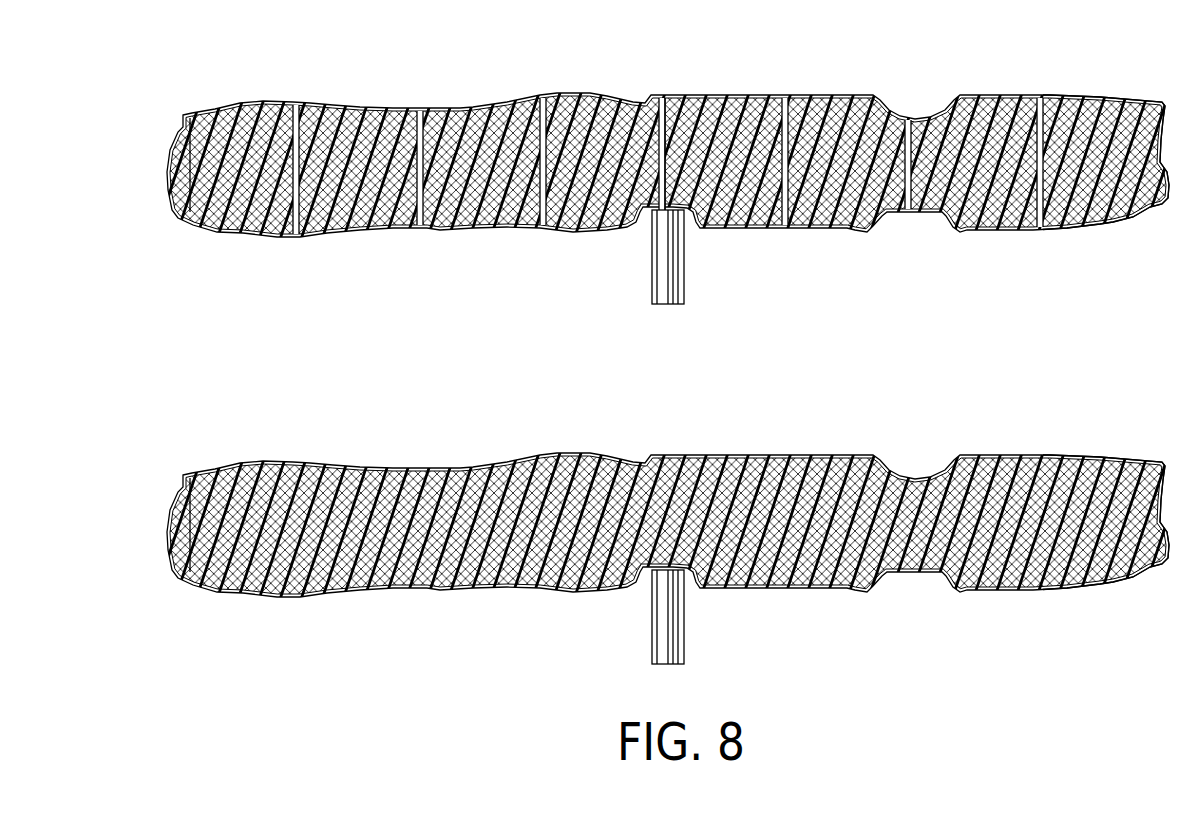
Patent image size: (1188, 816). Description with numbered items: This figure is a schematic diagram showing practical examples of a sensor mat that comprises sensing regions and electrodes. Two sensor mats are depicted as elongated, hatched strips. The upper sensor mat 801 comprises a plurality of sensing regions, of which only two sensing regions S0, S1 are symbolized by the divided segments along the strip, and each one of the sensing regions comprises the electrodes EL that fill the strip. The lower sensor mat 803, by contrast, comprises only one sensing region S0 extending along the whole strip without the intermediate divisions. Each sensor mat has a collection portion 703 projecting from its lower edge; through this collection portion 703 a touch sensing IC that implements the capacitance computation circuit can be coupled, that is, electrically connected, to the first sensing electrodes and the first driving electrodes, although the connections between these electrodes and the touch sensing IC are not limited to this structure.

The electrodes EL is at (355, 108).
The sensing region S0 is at (583, 96).
The sensing region S1 is at (733, 96).
The sensor mat 801 is at (1045, 96).
The sensor mat 803 is at (1045, 457).
The collection portion 703 is at (684, 272).